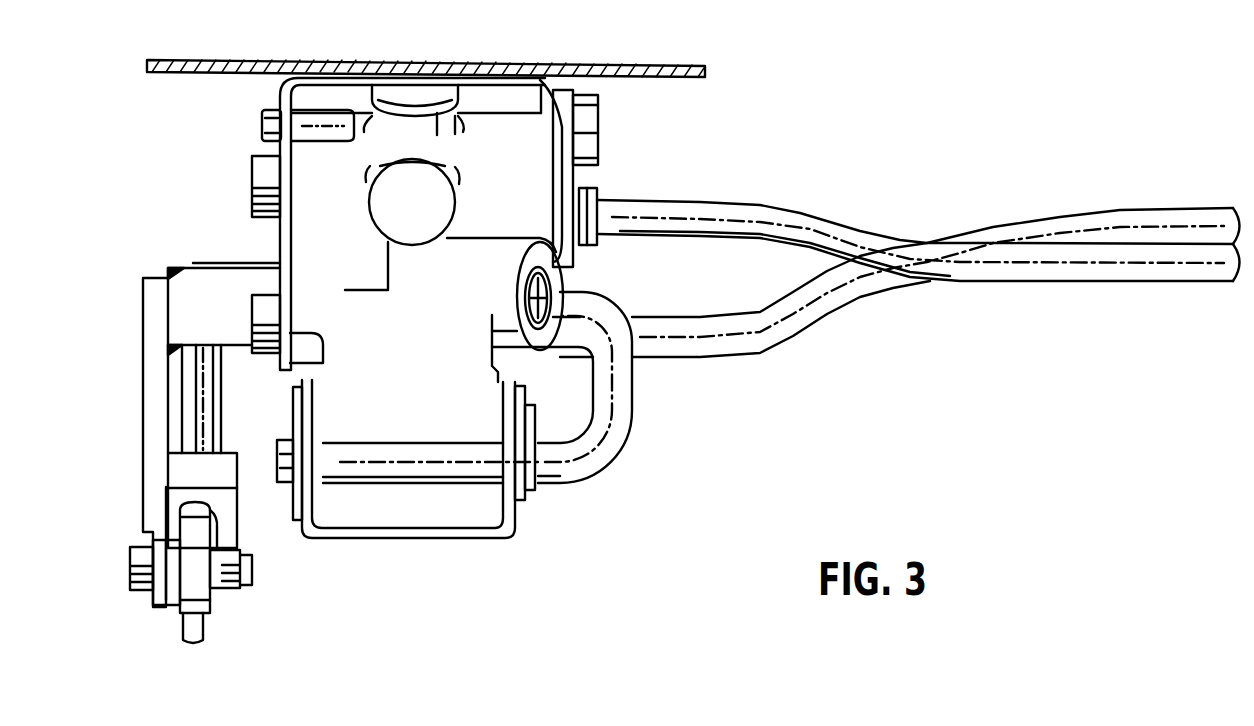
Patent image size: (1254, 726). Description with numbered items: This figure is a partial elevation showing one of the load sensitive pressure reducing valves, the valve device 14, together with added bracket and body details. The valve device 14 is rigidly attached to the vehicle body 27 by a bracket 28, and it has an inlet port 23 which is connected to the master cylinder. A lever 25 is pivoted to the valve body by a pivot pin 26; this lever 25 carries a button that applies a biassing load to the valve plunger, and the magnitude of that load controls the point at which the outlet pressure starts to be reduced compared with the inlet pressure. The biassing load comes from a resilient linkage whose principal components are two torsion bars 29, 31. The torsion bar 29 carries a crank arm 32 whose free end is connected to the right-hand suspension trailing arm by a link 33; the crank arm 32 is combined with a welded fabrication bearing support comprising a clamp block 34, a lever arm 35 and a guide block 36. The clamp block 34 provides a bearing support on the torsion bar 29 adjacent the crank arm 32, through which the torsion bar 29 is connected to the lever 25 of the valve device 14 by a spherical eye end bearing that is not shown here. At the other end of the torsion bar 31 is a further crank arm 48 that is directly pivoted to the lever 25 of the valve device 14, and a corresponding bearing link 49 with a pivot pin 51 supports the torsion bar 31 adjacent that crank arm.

The valve device 14 is at (543, 188).
The inlet port 23 is at (548, 294).
The lever 25 is at (517, 534).
The pivot pin 26 is at (297, 402).
The vehicle body 27 is at (565, 64).
The bracket 28 is at (278, 236).
The torsion bar 29 is at (820, 312).
The torsion bar 31 is at (782, 221).
The crank arm 32 is at (207, 400).
The link 33 is at (205, 632).
The clamp block 34 is at (228, 282).
The lever arm 35 is at (164, 605).
The guide block 36 is at (230, 478).
The crank arm 48 is at (632, 412).
The bearing link 49 is at (548, 183).
The pivot pin 51 is at (600, 129).